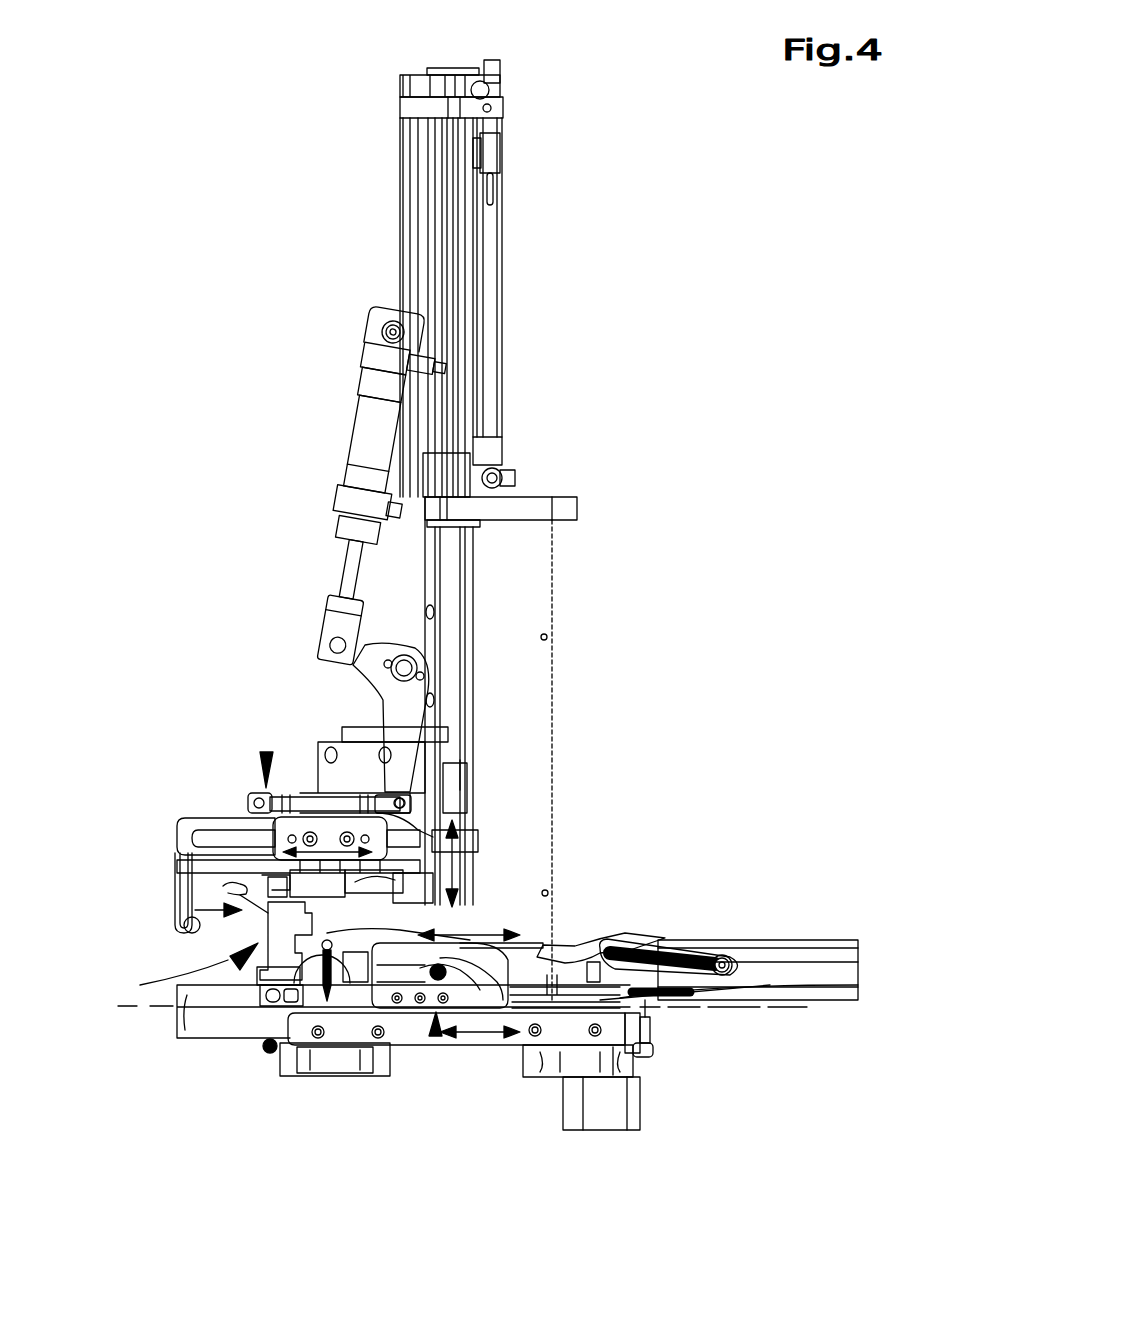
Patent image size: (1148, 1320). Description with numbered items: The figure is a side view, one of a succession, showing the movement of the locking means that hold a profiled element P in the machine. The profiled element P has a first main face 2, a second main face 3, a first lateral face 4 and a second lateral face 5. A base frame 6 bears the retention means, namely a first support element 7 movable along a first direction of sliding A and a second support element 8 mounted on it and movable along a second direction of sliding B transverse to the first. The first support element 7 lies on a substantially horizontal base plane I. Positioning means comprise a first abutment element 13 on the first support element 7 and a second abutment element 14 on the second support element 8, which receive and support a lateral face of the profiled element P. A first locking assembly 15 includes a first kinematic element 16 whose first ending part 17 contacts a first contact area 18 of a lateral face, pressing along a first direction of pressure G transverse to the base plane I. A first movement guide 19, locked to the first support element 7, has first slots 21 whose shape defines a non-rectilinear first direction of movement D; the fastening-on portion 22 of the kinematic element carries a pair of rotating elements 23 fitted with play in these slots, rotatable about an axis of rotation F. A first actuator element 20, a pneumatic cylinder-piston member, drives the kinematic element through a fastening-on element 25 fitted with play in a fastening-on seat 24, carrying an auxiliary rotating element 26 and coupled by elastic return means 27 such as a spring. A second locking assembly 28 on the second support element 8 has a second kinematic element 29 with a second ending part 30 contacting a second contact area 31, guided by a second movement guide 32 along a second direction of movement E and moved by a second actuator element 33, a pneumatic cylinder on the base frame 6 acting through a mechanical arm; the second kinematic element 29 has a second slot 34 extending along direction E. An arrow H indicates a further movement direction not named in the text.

The first main face 2 is at (295, 1025).
The second main face 3 is at (245, 868).
The first lateral face 4 is at (307, 935).
The second lateral face 5 is at (262, 925).
The base frame 6 is at (538, 555).
The first support element 7 is at (180, 1012).
The second support element 8 is at (195, 867).
The first abutment element 13 is at (370, 998).
The second abutment element 14 is at (428, 840).
The first locking assembly 15 is at (436, 1036).
The first kinematic element 16 is at (578, 960).
The first ending part 17 is at (287, 962).
The first contact area 18 is at (333, 1000).
The first movement guide 19 is at (572, 985).
The first actuator element 20 is at (848, 953).
The first slots 21 is at (373, 1000).
The fastening-on portion 22 is at (503, 997).
The rotating elements 23 is at (505, 985).
The fastening-on seat 24 is at (622, 985).
The fastening-on element 25 is at (632, 955).
The auxiliary rotating element 26 is at (690, 993).
The elastic return means 27 is at (717, 962).
The second locking assembly 28 is at (266, 752).
The second kinematic element 29 is at (193, 827).
The second ending part 30 is at (187, 938).
The second contact area 31 is at (200, 910).
The second movement guide 32 is at (352, 800).
The second actuator element 33 is at (362, 330).
The second slot 34 is at (247, 867).
The first direction of sliding A is at (490, 1033).
The second direction of sliding B is at (483, 930).
The first direction of movement D is at (470, 925).
The second direction of movement E is at (288, 835).
The axis of rotation F is at (473, 1000).
The first direction of pressure G is at (320, 975).
The direction H is at (192, 908).
The base plane I is at (138, 1010).
The profiled element P is at (140, 985).